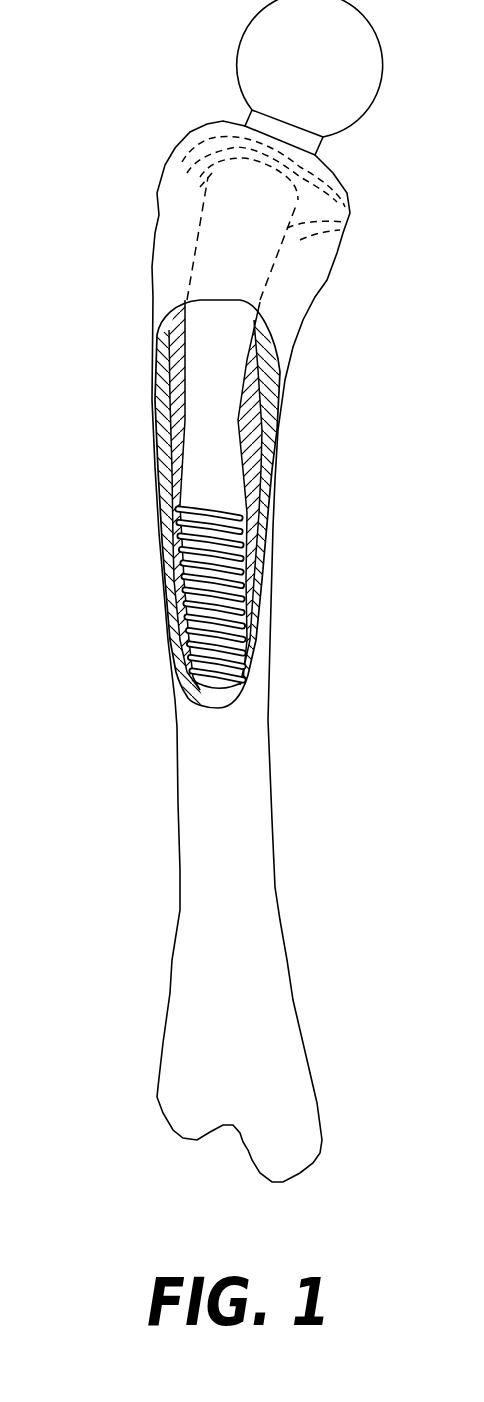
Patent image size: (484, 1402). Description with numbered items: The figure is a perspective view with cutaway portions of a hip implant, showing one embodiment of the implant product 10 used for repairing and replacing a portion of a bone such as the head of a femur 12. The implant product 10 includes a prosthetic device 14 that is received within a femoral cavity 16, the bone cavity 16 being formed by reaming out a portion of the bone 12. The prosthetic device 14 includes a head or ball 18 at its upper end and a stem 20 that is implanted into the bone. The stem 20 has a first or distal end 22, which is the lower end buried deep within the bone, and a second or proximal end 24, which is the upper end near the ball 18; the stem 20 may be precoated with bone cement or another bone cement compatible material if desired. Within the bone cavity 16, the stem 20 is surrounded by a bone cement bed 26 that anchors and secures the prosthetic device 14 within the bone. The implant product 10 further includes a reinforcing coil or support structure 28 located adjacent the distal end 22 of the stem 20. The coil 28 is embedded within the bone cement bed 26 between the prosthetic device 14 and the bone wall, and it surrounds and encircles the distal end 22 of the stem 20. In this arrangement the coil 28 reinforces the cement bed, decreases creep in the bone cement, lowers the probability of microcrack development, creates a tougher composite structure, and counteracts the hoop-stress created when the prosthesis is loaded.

The implant product 10 is at (128, 138).
The femur 12 is at (203, 798).
The prosthetic device 14 is at (202, 345).
The femoral cavity 16 is at (165, 461).
The head or ball 18 is at (353, 50).
The stem 20 is at (230, 395).
The distal end 22 is at (223, 615).
The proximal end 24 is at (283, 208).
The bone cement bed 26 is at (177, 493).
The reinforcing coil 28 is at (235, 553).